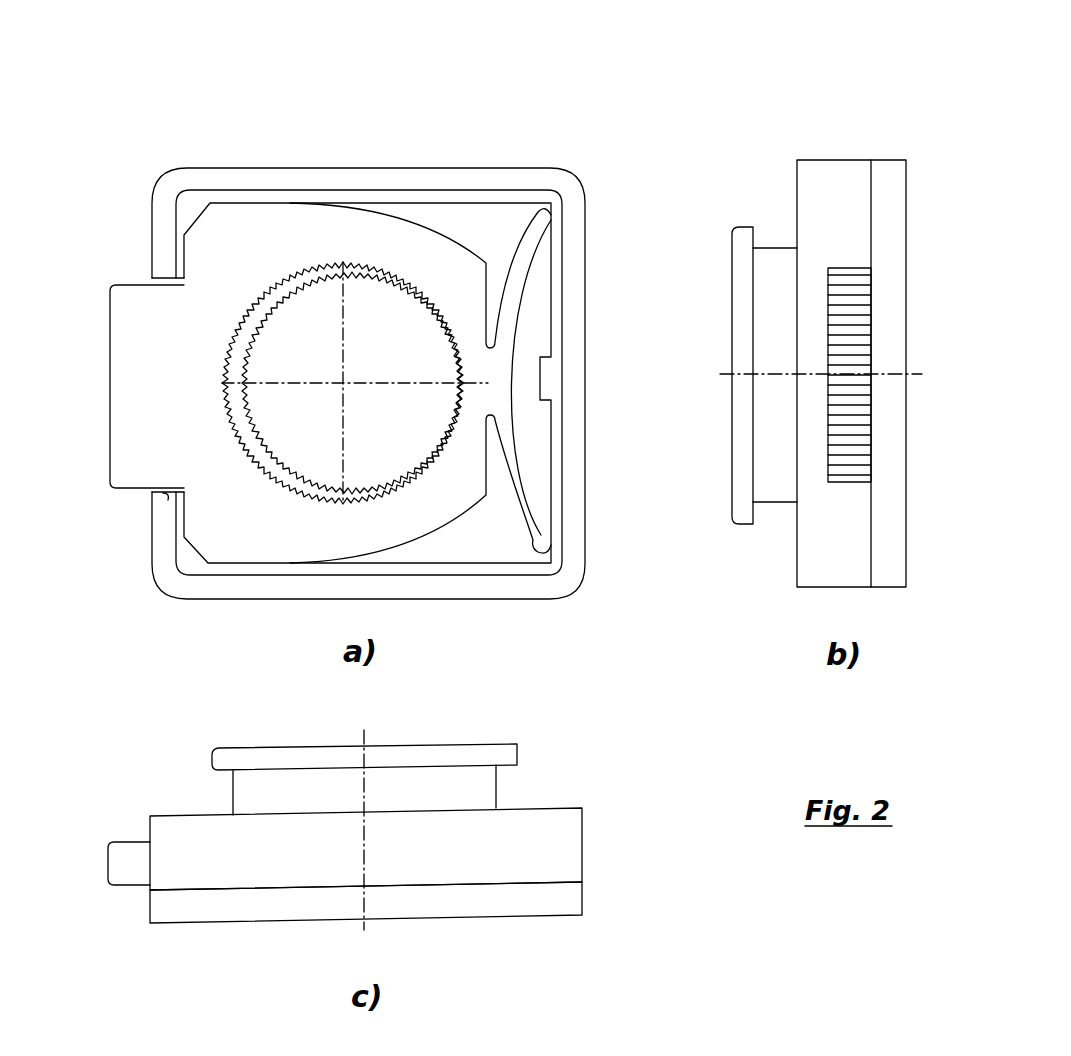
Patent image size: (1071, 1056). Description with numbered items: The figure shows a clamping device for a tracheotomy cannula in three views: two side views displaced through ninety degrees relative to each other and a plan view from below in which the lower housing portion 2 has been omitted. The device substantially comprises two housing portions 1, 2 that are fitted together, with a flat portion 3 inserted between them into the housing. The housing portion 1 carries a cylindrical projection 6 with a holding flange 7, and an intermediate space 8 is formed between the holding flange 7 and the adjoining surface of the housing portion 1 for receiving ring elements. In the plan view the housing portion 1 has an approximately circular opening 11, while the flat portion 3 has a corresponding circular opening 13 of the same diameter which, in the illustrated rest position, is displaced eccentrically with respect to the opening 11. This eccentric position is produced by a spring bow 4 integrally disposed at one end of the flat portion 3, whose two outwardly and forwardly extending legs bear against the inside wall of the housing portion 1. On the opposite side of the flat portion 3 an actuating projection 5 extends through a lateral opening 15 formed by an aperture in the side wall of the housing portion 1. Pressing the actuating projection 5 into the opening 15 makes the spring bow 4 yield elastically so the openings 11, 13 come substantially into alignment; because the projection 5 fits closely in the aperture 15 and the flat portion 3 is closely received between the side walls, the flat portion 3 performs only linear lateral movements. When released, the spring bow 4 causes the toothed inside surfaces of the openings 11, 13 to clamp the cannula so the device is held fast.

The housing portion 1 is at (812, 193).
The lower housing portion 2 is at (888, 177).
The flat portion 3 is at (451, 226).
The spring bow 4 is at (531, 243).
The actuating projection 5 is at (130, 302).
The cylindrical projection 6 is at (775, 267).
The holding flange 7 is at (521, 163).
The intermediate space 8 is at (503, 785).
The circular opening 11 is at (295, 288).
The circular opening 13 is at (270, 298).
The lateral opening 15 is at (163, 493).